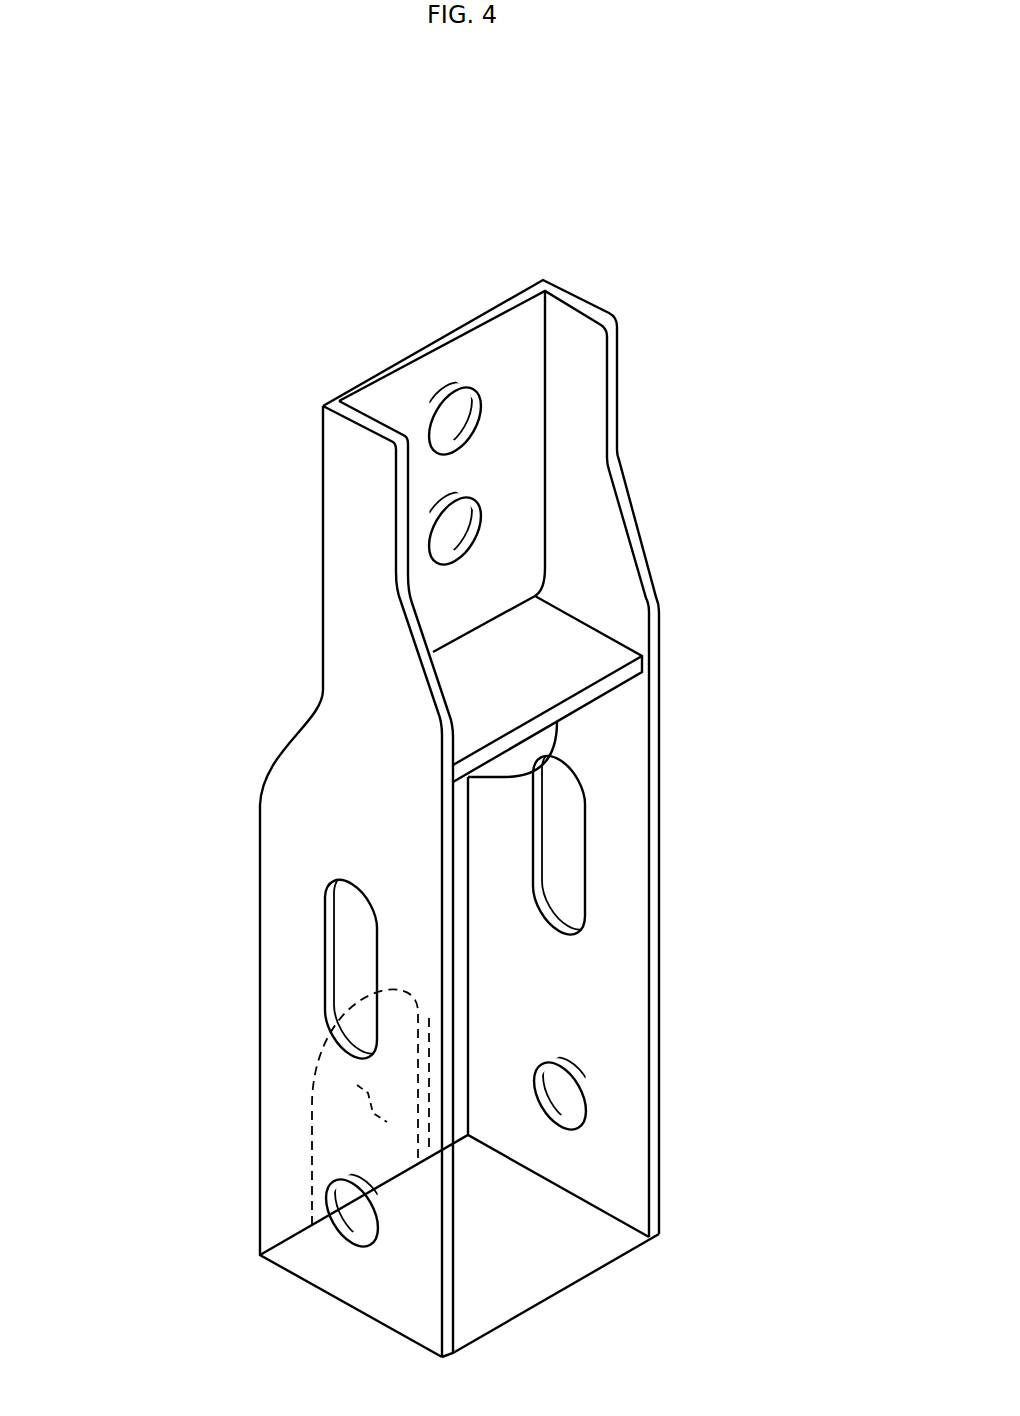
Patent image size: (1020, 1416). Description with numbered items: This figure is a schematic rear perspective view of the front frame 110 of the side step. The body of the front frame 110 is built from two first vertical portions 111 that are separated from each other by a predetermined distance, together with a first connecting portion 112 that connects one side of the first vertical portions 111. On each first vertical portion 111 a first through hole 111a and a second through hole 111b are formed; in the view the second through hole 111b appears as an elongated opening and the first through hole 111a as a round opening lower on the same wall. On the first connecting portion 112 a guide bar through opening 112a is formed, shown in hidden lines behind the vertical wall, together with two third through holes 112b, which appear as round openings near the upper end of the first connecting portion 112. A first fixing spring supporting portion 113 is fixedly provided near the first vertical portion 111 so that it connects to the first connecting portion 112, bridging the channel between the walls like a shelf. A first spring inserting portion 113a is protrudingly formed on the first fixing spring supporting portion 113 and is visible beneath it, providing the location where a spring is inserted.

The front frame 110 is at (518, 119).
The first vertical portion 111 is at (357, 842).
The first through hole 111a is at (695, 1094).
The second through hole 111b is at (703, 843).
The first connecting portion 112 is at (558, 438).
The guide bar through opening 112a is at (137, 1180).
The third through hole 112b is at (607, 474).
The first fixing spring supporting portion 113 is at (636, 663).
The first spring inserting portion 113a is at (665, 729).